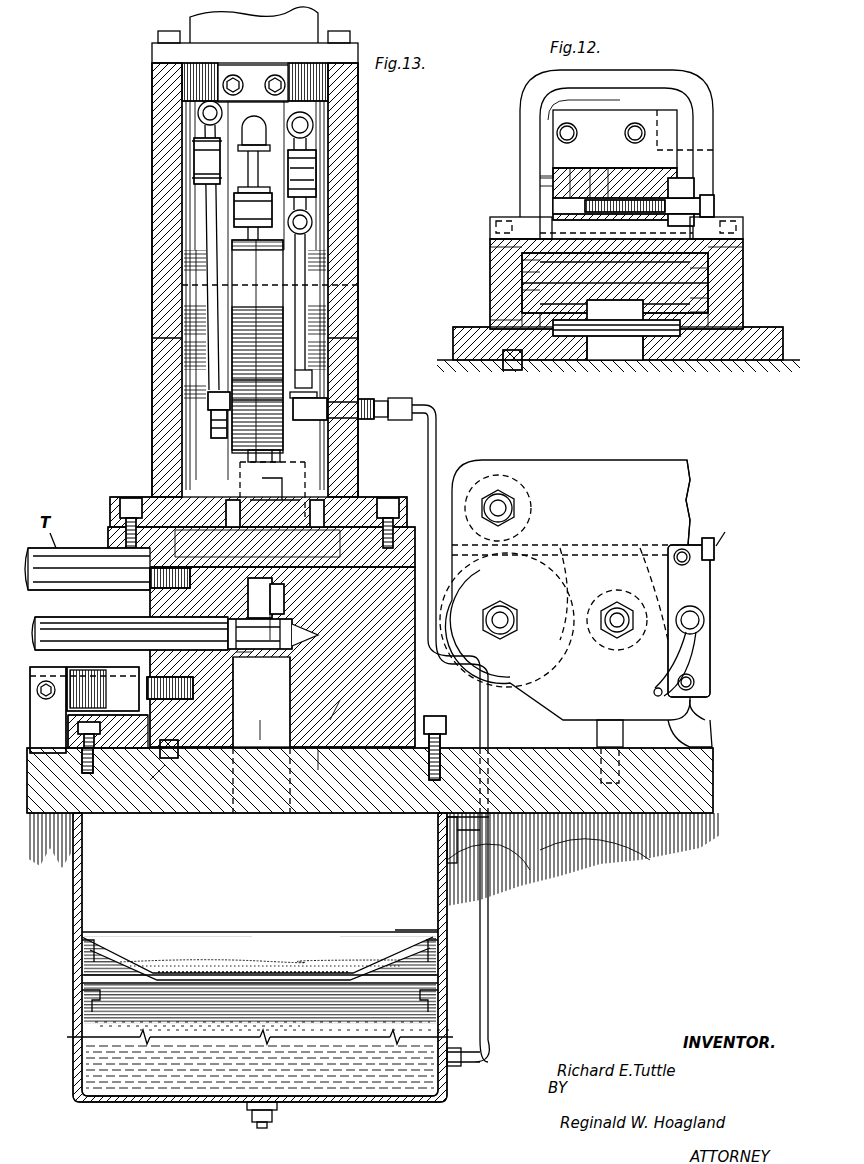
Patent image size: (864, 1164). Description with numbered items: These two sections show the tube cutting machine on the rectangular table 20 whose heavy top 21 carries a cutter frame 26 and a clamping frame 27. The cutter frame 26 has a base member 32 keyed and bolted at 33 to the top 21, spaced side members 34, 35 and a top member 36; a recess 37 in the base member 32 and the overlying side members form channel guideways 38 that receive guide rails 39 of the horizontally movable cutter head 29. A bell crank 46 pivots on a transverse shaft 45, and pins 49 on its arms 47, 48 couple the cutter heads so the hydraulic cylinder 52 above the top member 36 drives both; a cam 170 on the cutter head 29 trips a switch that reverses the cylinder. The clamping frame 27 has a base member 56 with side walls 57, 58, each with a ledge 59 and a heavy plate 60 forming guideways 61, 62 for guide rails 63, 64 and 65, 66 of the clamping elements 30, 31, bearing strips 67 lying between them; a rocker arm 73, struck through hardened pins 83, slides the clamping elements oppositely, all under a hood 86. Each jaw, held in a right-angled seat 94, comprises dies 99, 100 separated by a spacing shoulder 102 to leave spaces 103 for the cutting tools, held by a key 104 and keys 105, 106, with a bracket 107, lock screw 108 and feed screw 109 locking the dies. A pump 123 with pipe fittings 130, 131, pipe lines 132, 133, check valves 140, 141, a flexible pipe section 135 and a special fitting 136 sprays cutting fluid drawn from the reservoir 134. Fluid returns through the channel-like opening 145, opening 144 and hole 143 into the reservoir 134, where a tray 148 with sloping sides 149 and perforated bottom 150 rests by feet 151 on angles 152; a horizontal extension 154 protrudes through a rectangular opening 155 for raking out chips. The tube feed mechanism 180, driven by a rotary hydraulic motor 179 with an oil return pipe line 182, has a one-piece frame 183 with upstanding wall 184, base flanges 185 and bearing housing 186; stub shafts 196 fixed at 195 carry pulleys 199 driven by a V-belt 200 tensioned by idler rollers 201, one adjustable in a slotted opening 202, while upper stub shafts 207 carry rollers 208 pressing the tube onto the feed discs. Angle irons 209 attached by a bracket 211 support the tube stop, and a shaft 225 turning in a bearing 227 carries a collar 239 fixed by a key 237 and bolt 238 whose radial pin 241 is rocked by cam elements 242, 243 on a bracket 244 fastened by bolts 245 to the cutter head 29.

In FIG. 13, the table 20 is at (707, 746).
In FIG. 13, the table top 21 is at (690, 780).
In FIG. 12, the table top 21 is at (455, 354).
In FIG. 13, the cutter frame 26 is at (146, 433).
In FIG. 12, the clamping frame 27 is at (482, 308).
In FIG. 13, the horizontally movable tube cutter head 29 is at (345, 520).
In FIG. 12, the tube-clamping element 30 is at (612, 338).
In FIG. 12, the tube-clamping element 31 is at (620, 325).
In FIG. 13, the base member 32 is at (165, 765).
In FIG. 13, the keyed and bolted connection 33 is at (95, 775).
In FIG. 13, the side member 34 is at (152, 240).
In FIG. 13, the side member 35 is at (358, 202).
In FIG. 13, the top member 36 is at (195, 80).
In FIG. 13, the recess 37 is at (434, 569).
In FIG. 13, the channel guideways 38 is at (112, 540).
In FIG. 13, the guide rails 39 is at (126, 520).
In FIG. 13, the transverse shaft 45 is at (340, 285).
In FIG. 13, the bell crank 46 is at (235, 378).
In FIG. 13, the arm 47 is at (240, 248).
In FIG. 13, the arm 48 is at (240, 392).
In FIG. 13, the pins 49 is at (268, 462).
In FIG. 13, the hydraulic cylinder 52 is at (300, 31).
In FIG. 12, the base member 56 is at (560, 345).
In FIG. 12, the side wall 57 is at (517, 272).
In FIG. 12, the side wall 58 is at (740, 285).
In FIG. 12, the ledge 59 is at (530, 350).
In FIG. 12, the heavy plate 60 is at (492, 228).
In FIG. 12, the channel guideway 61 is at (515, 258).
In FIG. 12, the channel guideway 62 is at (730, 252).
In FIG. 12, the guide rail 63 is at (520, 320).
In FIG. 12, the guide rail 64 is at (712, 298).
In FIG. 12, the guide rail 65 is at (493, 246).
In FIG. 12, the guide rail 66 is at (742, 268).
In FIG. 12, the bearing strips 67 is at (520, 290).
In FIG. 12, the rocker arm 73 is at (565, 105).
In FIG. 12, the hardened pins 83 is at (572, 120).
In FIG. 12, the hood 86 is at (690, 100).
In FIG. 12, the right-angled seat 94 is at (553, 188).
In FIG. 12, the die 99 is at (555, 166).
In FIG. 12, the die 100 is at (626, 170).
In FIG. 12, the spacing shoulder 102 is at (575, 170).
In FIG. 12, the spaces 103 is at (598, 167).
In FIG. 12, the key 104 is at (555, 208).
In FIG. 12, the key 105 is at (558, 176).
In FIG. 12, the key 106 is at (705, 150).
In FIG. 12, the bracket 107 is at (694, 182).
In FIG. 12, the lock screw 108 is at (700, 195).
In FIG. 12, the feed screw 109 is at (714, 208).
In FIG. 13, the pump 123 is at (226, 140).
In FIG. 13, the pipe fitting 130 is at (282, 120).
In FIG. 13, the pipe fitting 131 is at (216, 125).
In FIG. 13, the pipe line 132 is at (306, 240).
In FIG. 13, the pipe line 133 is at (222, 205).
In FIG. 13, the cutting fluid reservoir 134 is at (400, 1102).
In FIG. 13, the flexible pipe section 135 is at (215, 298).
In FIG. 13, the special fitting 136 is at (215, 438).
In FIG. 13, the check valve 140 is at (310, 178).
In FIG. 13, the check valve 141 is at (196, 162).
In FIG. 13, the hole 143 is at (318, 770).
In FIG. 12, the hole 143 is at (598, 360).
In FIG. 12, the opening 144 is at (652, 355).
In FIG. 13, the channel-like opening 145 is at (260, 740).
In FIG. 13, the tray 148 is at (338, 960).
In FIG. 13, the sloping sides 149 is at (90, 955).
In FIG. 13, the perforated bottom 150 is at (258, 968).
In FIG. 13, the feet 151 is at (82, 983).
In FIG. 13, the angles 152 is at (85, 1000).
In FIG. 13, the horizontal extension 154 is at (392, 935).
In FIG. 13, the rectangular opening 155 is at (447, 920).
In FIG. 13, the cam 170 is at (200, 515).
In FIG. 13, the rotary hydraulic motor 179 is at (710, 650).
In FIG. 13, the tube feed mechanism 180 is at (669, 459).
In FIG. 13, the oil return pipe line 182 is at (705, 720).
In FIG. 13, the one-piece frame 183 is at (619, 456).
In FIG. 13, the upstanding wall 184 is at (668, 494).
In FIG. 13, the base flanges 185 is at (582, 720).
In FIG. 13, the bearing housing 186 is at (695, 703).
In FIG. 13, the fixed attachment 195 is at (503, 610).
In FIG. 13, the stub shafts 196 is at (514, 620).
In FIG. 13, the pulleys 199 is at (566, 590).
In FIG. 13, the V-belt 200 is at (614, 568).
In FIG. 13, the idler rollers 201 is at (597, 640).
In FIG. 13, the slotted opening 202 is at (628, 640).
In FIG. 13, the stub shafts 207 is at (512, 508).
In FIG. 13, the rollers 208 is at (520, 478).
In FIG. 13, the angle irons 209 is at (128, 676).
In FIG. 13, the bracket 211 is at (62, 668).
In FIG. 13, the shaft 225 is at (70, 620).
In FIG. 13, the bearing 227 is at (155, 606).
In FIG. 13, the key 237 is at (248, 666).
In FIG. 13, the bolt 238 is at (261, 735).
In FIG. 13, the collar 239 is at (248, 678).
In FIG. 13, the radially projecting pin 241 is at (282, 640).
In FIG. 13, the cam element 242 is at (266, 598).
In FIG. 13, the cam element 243 is at (288, 650).
In FIG. 13, the bracket 244 is at (278, 492).
In FIG. 13, the bolts 245 is at (272, 489).